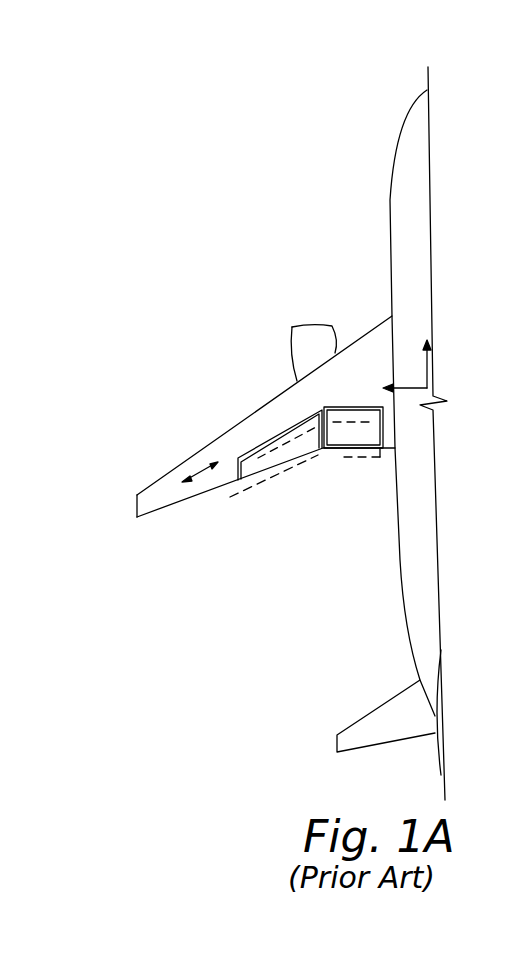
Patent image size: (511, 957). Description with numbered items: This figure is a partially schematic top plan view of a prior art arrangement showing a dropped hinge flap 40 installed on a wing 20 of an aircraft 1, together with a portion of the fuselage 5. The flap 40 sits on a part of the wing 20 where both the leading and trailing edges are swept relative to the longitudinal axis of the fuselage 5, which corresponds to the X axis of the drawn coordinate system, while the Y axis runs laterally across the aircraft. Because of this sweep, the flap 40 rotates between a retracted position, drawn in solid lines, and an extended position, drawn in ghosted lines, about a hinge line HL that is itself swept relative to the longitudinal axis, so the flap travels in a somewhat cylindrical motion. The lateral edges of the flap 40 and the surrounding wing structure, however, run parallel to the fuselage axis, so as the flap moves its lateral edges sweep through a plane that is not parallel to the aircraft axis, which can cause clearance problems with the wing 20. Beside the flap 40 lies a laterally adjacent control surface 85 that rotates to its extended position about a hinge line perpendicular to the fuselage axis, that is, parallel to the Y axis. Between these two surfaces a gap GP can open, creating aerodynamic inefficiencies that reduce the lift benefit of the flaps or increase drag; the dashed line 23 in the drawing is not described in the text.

The aircraft 1 is at (392, 431).
The fuselage 5 is at (400, 200).
The wing 20 is at (218, 450).
The flap trailing edge / hinge region line 23 is at (281, 493).
The dropped hinge flap 40 is at (283, 442).
The laterally adjacent control surface 85 is at (357, 412).
The hinge line HL is at (189, 482).
The gap GP is at (321, 465).
The X axis X is at (426, 354).
The Y axis Y is at (399, 389).